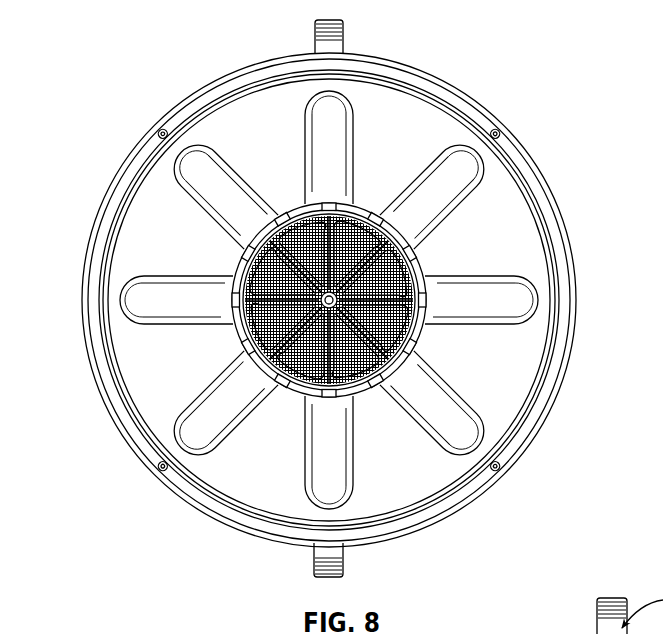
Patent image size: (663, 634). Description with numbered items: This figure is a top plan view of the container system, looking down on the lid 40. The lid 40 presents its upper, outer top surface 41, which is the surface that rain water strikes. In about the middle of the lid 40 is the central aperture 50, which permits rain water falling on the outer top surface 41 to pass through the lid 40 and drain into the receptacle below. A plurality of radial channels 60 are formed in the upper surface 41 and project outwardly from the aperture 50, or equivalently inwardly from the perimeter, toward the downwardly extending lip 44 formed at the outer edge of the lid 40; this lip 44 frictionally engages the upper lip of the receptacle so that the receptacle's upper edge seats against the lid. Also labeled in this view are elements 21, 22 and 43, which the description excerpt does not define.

The inlet fitting 21 is at (340, 47).
The outlet fitting 22 is at (338, 550).
The lid 40 is at (508, 368).
The outer top surface 41 is at (503, 218).
The flange 43 is at (546, 388).
The lip 44 is at (572, 247).
The central aperture 50 is at (262, 330).
The radial channels 60 is at (203, 408).